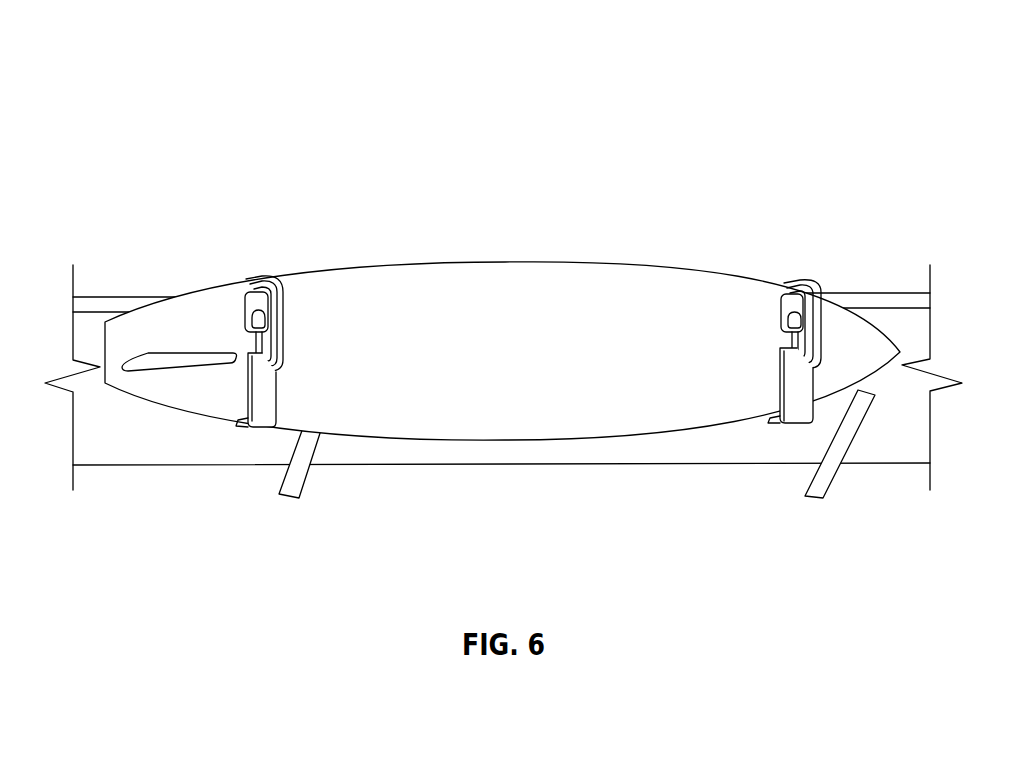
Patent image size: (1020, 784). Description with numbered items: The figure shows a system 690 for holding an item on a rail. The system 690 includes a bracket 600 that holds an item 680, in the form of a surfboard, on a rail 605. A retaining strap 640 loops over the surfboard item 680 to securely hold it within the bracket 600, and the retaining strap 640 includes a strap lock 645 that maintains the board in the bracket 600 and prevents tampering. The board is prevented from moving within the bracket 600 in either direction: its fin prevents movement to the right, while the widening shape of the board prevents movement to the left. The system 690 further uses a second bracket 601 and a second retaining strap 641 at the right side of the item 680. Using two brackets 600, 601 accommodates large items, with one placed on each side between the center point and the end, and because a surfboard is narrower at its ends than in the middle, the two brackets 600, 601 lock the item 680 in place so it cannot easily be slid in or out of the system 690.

The system 690 is at (653, 152).
The item 680 is at (487, 297).
The retaining strap 640 is at (270, 277).
The strap lock 645 is at (250, 305).
The bracket 600 is at (263, 427).
The second retaining strap 641 is at (783, 277).
The second bracket 601 is at (793, 412).
The rail 605 is at (880, 293).